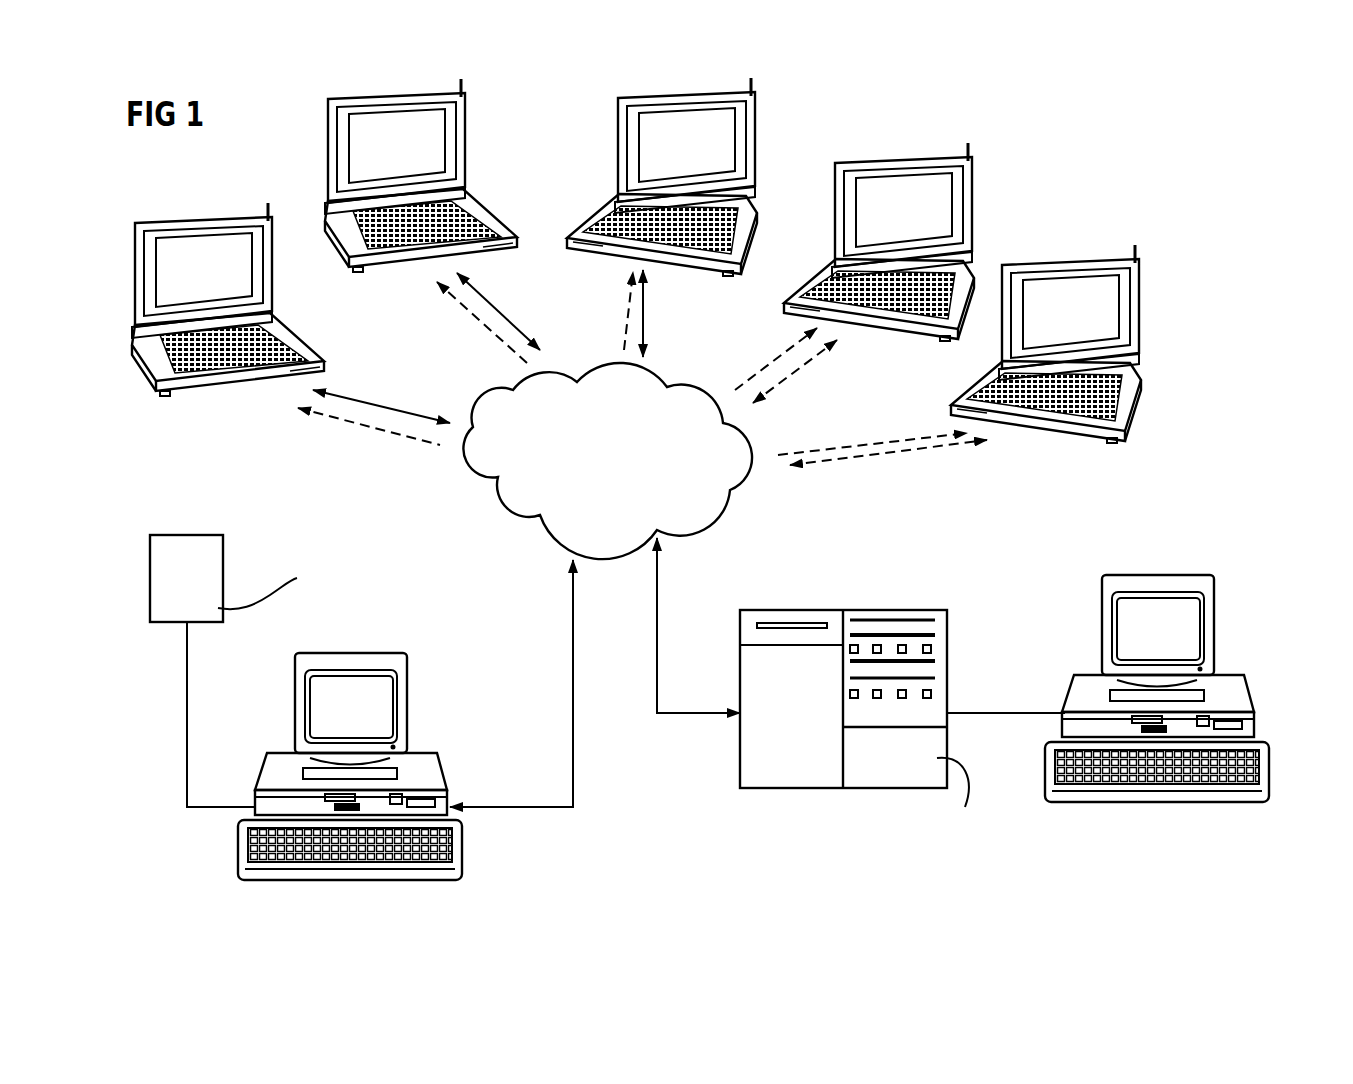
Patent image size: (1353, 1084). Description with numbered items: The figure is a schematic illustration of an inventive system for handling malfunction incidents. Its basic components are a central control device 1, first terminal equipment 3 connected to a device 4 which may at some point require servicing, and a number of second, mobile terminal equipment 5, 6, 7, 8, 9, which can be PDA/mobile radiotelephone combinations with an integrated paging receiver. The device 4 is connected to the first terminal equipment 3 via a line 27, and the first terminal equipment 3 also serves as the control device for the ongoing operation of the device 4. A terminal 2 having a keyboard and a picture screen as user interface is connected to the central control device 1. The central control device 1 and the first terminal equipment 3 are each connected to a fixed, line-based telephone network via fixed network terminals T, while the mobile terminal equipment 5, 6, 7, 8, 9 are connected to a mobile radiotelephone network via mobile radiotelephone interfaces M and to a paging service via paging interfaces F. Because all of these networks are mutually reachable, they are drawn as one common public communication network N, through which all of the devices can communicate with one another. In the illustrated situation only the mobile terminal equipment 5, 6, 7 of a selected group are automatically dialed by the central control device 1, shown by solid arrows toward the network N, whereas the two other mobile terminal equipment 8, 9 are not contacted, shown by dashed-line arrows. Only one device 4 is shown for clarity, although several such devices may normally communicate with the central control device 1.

The central control device 1 is at (833, 610).
The terminal 2 is at (1253, 695).
The first terminal equipment 3 is at (442, 775).
The device to be serviced 4 is at (223, 577).
The mobile terminal equipment 5 is at (203, 222).
The mobile terminal equipment 6 is at (342, 157).
The mobile terminal equipment 7 is at (624, 146).
The mobile terminal equipment 8 is at (902, 168).
The mobile terminal equipment 9 is at (1072, 275).
The line 27 is at (222, 806).
The public communication network N is at (542, 527).
The fixed network terminal T is at (573, 658).
The paging interface F is at (375, 432).
The mobile radiotelephone interface M is at (384, 402).